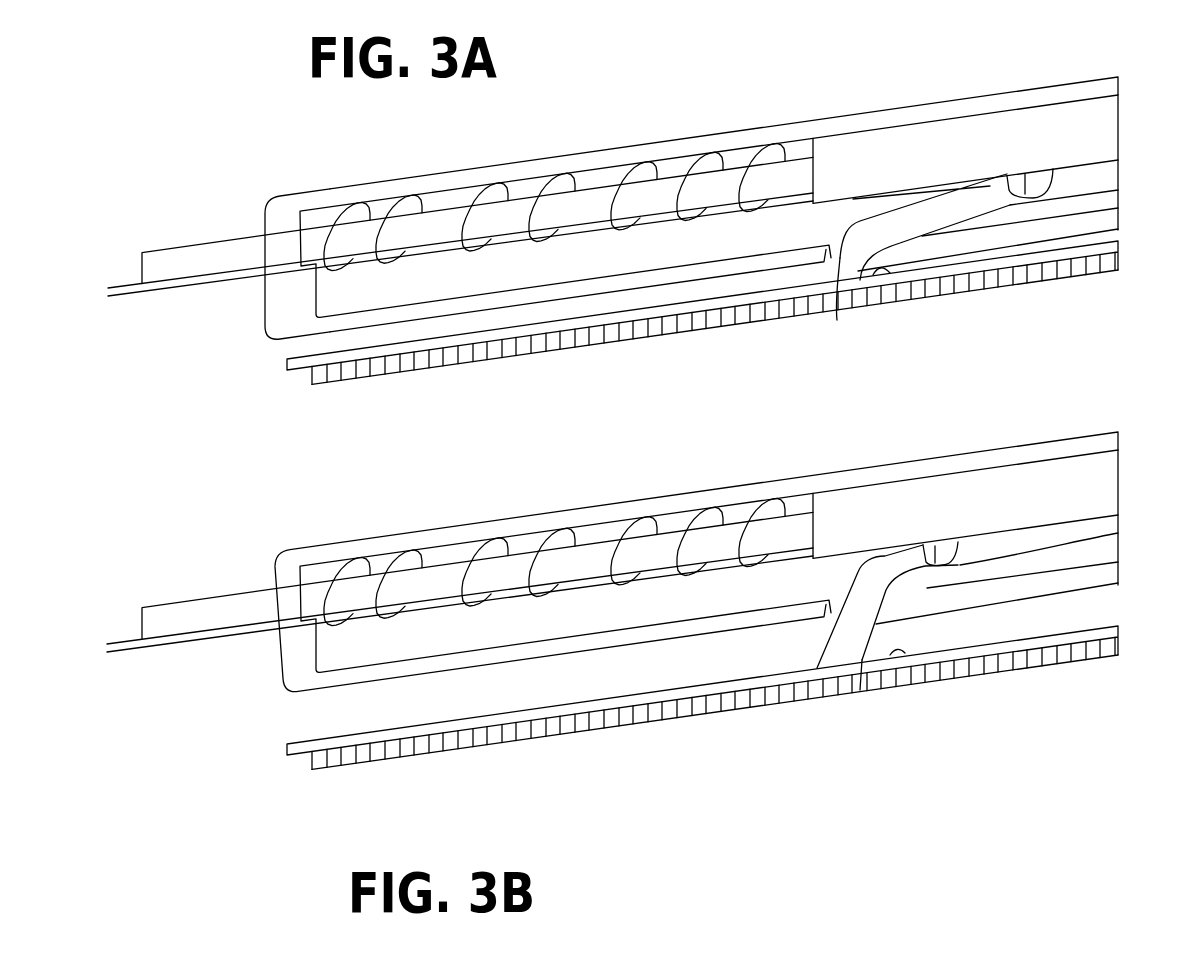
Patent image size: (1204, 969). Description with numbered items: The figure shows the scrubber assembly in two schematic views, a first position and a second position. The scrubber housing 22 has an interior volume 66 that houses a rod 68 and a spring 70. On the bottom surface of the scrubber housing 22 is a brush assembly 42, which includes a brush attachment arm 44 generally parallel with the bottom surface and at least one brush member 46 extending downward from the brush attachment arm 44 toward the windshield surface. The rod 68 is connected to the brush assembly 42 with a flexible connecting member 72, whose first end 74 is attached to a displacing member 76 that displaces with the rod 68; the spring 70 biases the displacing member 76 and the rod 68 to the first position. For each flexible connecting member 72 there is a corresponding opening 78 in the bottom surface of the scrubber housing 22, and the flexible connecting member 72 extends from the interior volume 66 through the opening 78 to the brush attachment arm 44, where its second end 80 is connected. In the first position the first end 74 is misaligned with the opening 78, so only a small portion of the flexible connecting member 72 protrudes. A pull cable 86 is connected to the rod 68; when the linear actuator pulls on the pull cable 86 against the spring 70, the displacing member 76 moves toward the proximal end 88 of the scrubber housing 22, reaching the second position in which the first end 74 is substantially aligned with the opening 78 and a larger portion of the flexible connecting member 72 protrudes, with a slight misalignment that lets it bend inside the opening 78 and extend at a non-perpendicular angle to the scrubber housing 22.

In FIG. 3A, the scrubber housing 22 is at (433, 172).
In FIG. 3A, the brush assembly 42 is at (828, 328).
In FIG. 3B, the brush assembly 42 is at (806, 716).
In FIG. 3A, the brush attachment arm 44 is at (1103, 247).
In FIG. 3B, the brush attachment arm 44 is at (1104, 628).
In FIG. 3A, the brush member 46 is at (1072, 268).
In FIG. 3B, the brush member 46 is at (1073, 655).
In FIG. 3A, the interior volume 66 is at (575, 263).
In FIG. 3B, the interior volume 66 is at (573, 626).
In FIG. 3A, the rod 68 is at (573, 203).
In FIG. 3B, the rod 68 is at (455, 578).
In FIG. 3A, the spring 70 is at (705, 150).
In FIG. 3B, the spring 70 is at (636, 512).
In FIG. 3A, the flexible connecting member 72 is at (923, 228).
In FIG. 3B, the flexible connecting member 72 is at (890, 622).
In FIG. 3A, the first end 74 is at (1102, 188).
In FIG. 3B, the first end 74 is at (1119, 534).
In FIG. 3A, the displacing member 76 is at (1026, 136).
In FIG. 3B, the displacing member 76 is at (1063, 482).
In FIG. 3A, the opening 78 is at (837, 320).
In FIG. 3B, the opening 78 is at (860, 690).
In FIG. 3A, the second end 80 is at (888, 273).
In FIG. 3B, the second end 80 is at (898, 645).
In FIG. 3A, the pull cable 86 is at (123, 297).
In FIG. 3B, the pull cable 86 is at (122, 652).
In FIG. 3A, the proximal end 88 is at (260, 220).
In FIG. 3B, the proximal end 88 is at (274, 575).